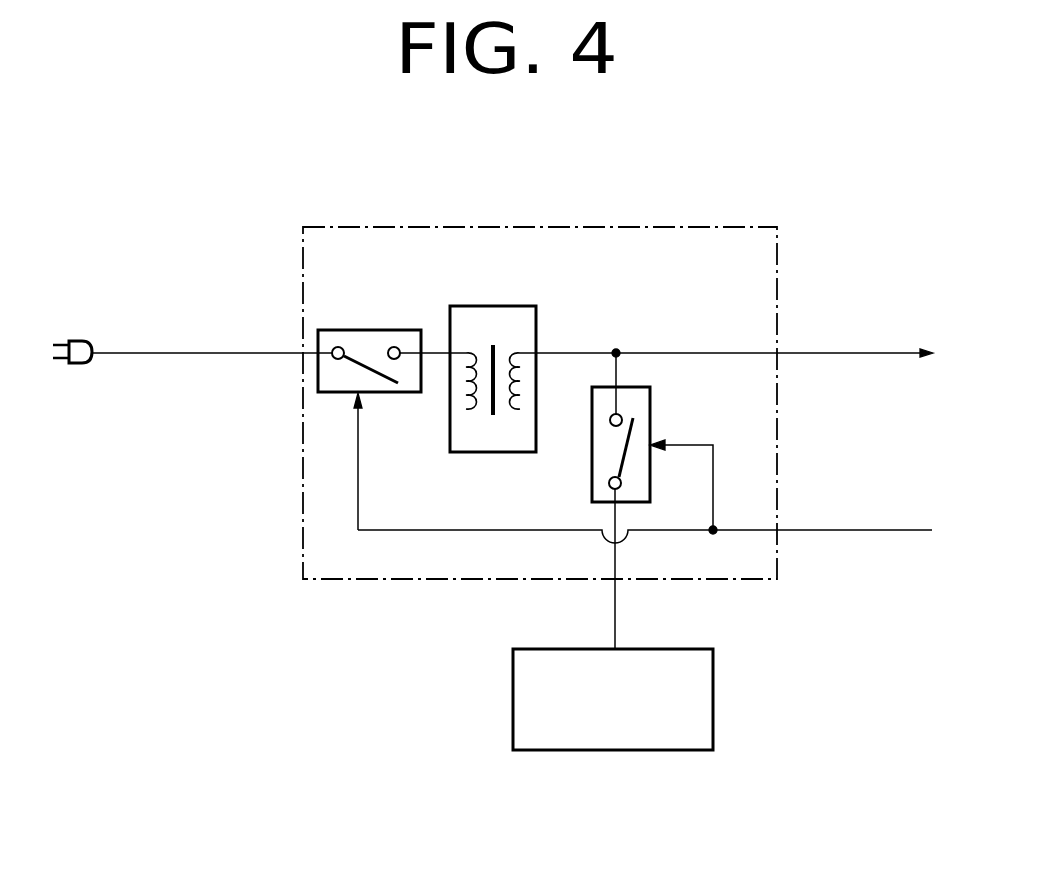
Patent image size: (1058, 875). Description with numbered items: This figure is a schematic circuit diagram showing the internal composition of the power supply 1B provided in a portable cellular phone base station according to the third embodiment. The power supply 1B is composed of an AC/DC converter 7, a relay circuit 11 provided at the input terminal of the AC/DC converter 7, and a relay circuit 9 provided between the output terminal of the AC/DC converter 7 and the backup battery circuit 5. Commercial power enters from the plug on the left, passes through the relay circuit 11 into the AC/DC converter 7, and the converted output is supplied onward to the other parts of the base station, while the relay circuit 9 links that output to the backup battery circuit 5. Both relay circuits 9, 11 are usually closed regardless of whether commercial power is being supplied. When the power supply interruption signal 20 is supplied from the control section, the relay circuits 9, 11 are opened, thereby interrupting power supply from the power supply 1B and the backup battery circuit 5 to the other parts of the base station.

The power supply 1B is at (623, 226).
The relay circuit 11 is at (363, 330).
The AC/DC converter 7 is at (536, 321).
The relay circuit 9 is at (650, 411).
The power supply interruption signal 20 is at (855, 530).
The backup battery circuit 5 is at (713, 697).